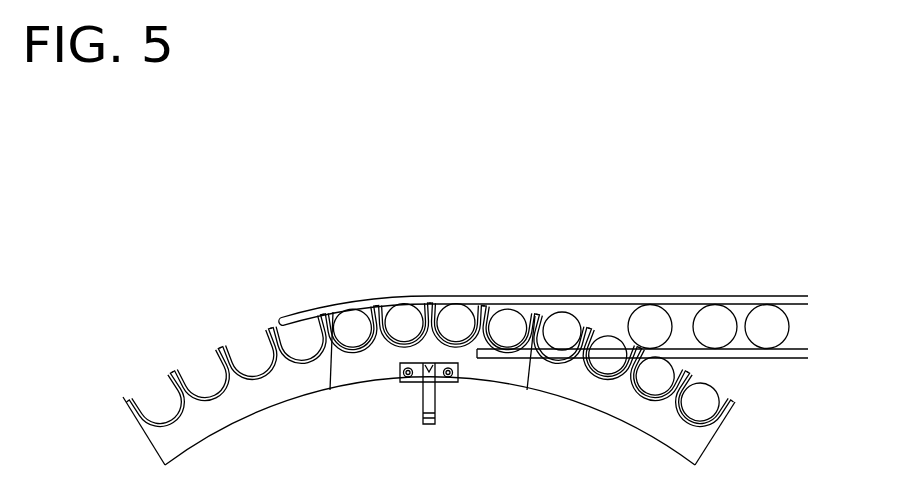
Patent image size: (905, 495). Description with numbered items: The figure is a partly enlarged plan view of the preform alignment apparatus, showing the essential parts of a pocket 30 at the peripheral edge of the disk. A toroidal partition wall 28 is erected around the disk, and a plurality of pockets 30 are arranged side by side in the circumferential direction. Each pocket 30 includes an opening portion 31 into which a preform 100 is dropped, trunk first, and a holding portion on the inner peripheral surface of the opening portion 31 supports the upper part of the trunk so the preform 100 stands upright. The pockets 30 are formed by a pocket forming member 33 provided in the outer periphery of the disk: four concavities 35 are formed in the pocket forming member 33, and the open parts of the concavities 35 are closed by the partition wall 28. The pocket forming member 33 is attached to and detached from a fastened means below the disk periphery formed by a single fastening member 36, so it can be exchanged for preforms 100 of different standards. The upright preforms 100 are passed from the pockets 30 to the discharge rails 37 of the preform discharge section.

The partition wall 28 is at (333, 312).
The pocket 30 is at (302, 304).
The opening portion 31 is at (295, 270).
The pocket forming member 33 is at (368, 373).
The concavity 35 is at (290, 350).
The fastening member 36 is at (436, 400).
The discharge rails 37 is at (736, 297).
The preform 100 is at (625, 302).